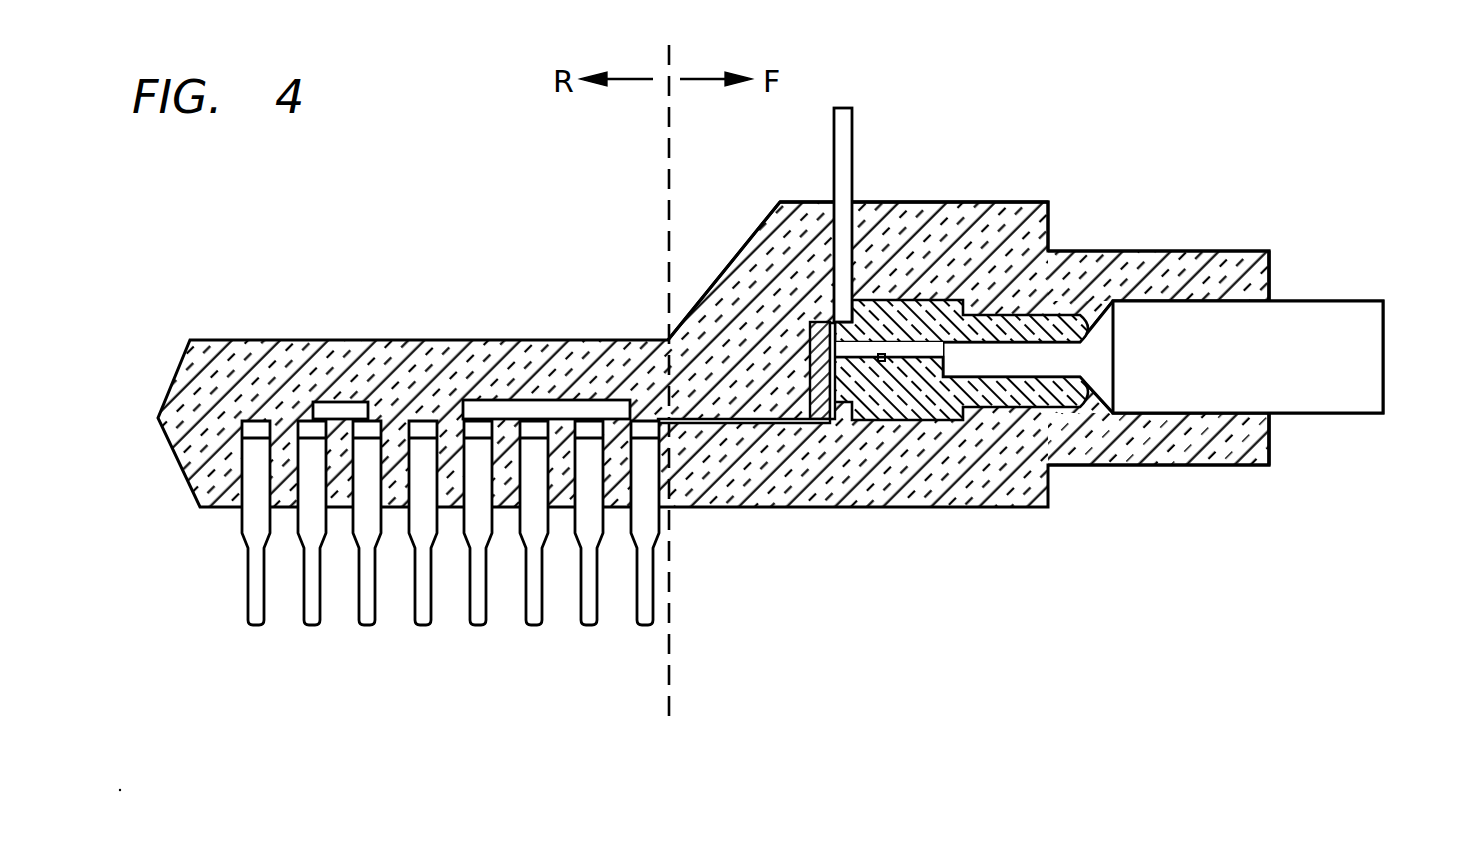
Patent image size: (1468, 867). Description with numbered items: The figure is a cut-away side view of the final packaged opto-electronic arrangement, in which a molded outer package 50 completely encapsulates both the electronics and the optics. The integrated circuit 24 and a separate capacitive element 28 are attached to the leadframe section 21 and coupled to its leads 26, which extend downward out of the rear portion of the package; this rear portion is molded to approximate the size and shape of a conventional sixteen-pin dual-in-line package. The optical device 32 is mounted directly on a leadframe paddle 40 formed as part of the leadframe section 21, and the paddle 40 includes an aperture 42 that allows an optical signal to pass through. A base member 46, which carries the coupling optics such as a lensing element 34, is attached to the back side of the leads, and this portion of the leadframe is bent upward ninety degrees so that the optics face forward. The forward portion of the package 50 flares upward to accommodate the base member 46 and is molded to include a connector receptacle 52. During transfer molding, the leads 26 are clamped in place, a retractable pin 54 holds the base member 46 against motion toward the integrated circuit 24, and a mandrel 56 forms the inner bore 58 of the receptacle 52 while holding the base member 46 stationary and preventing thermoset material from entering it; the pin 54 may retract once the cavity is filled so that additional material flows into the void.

The leadframe section 21 is at (743, 421).
The integrated circuit 24 is at (547, 400).
The leads 26 is at (658, 634).
The capacitive element 28 is at (348, 402).
The optical device 32 is at (812, 417).
The lensing element 34 is at (881, 362).
The leadframe paddle 40 is at (833, 298).
The aperture 42 is at (807, 330).
The base member 46 is at (923, 307).
The molded outer package 50 is at (1015, 230).
The connector receptacle 52 is at (1152, 251).
The retractable pin 54 is at (848, 133).
The mandrel 56 is at (1358, 342).
The inner bore 58 is at (1272, 415).